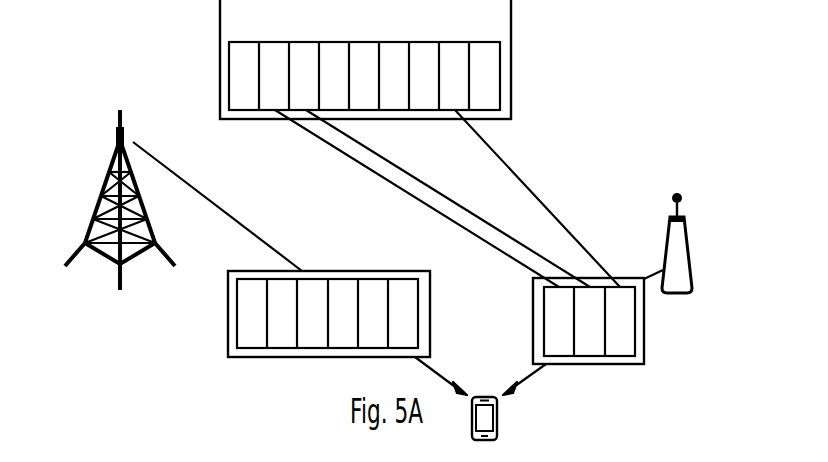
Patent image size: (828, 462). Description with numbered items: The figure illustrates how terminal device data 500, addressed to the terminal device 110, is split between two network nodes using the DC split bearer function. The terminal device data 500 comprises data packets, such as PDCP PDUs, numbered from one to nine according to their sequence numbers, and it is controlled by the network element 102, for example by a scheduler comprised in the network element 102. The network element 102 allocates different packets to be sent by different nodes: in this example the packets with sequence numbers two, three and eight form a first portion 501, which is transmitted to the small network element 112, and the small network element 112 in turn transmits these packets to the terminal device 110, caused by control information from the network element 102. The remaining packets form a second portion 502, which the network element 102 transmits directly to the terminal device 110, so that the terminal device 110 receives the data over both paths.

The terminal device data 500 is at (273, 34).
The network element 102 is at (102, 183).
The small network element 112 is at (688, 233).
The terminal device 110 is at (484, 376).
The first portion 501 is at (644, 320).
The second portion 502 is at (228, 312).